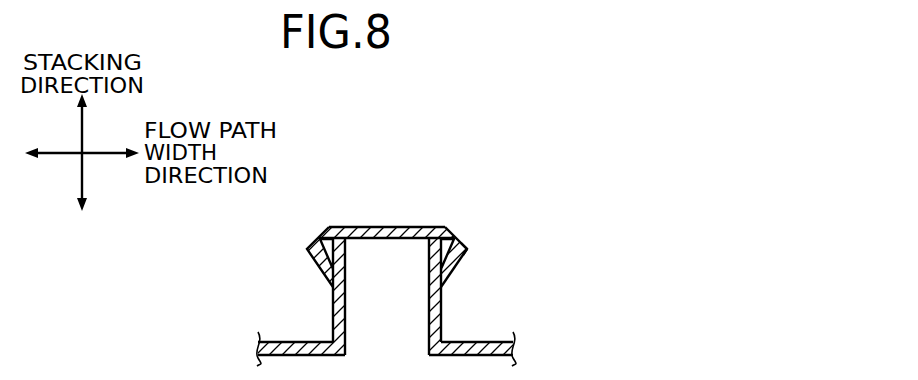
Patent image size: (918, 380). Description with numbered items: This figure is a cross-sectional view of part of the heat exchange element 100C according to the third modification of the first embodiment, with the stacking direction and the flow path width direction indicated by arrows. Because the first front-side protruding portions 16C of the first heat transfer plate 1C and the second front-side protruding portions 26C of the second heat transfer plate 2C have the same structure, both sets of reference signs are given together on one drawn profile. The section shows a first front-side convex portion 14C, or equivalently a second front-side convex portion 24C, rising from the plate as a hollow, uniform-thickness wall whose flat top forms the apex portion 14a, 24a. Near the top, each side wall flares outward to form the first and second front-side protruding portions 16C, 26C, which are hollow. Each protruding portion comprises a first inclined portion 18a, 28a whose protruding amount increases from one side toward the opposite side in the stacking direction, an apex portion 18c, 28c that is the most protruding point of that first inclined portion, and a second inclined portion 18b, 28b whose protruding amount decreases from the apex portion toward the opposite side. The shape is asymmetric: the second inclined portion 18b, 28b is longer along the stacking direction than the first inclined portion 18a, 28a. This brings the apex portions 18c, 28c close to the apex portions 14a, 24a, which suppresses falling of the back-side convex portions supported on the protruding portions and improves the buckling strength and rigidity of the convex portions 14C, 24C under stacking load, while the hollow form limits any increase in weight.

The heat exchange element 100C is at (539, 143).
The first heat transfer plate 1C is at (452, 349).
The second heat transfer plate 2C is at (517, 348).
The first front-side convex portion 14C is at (407, 184).
The second front-side convex portion 24C is at (363, 227).
The apex portion of first front-side convex portion 14a is at (412, 178).
The apex portion of second front-side convex portion 24a is at (414, 225).
The first front-side protruding portion 16C is at (408, 232).
The second front-side protruding portion 26C is at (307, 248).
The first inclined portion 18a is at (551, 233).
The first inclined portion 28a is at (458, 235).
The apex portion 18c is at (559, 258).
The apex portion 28c is at (467, 248).
The second inclined portion 18b is at (550, 275).
The second inclined portion 28b is at (455, 272).